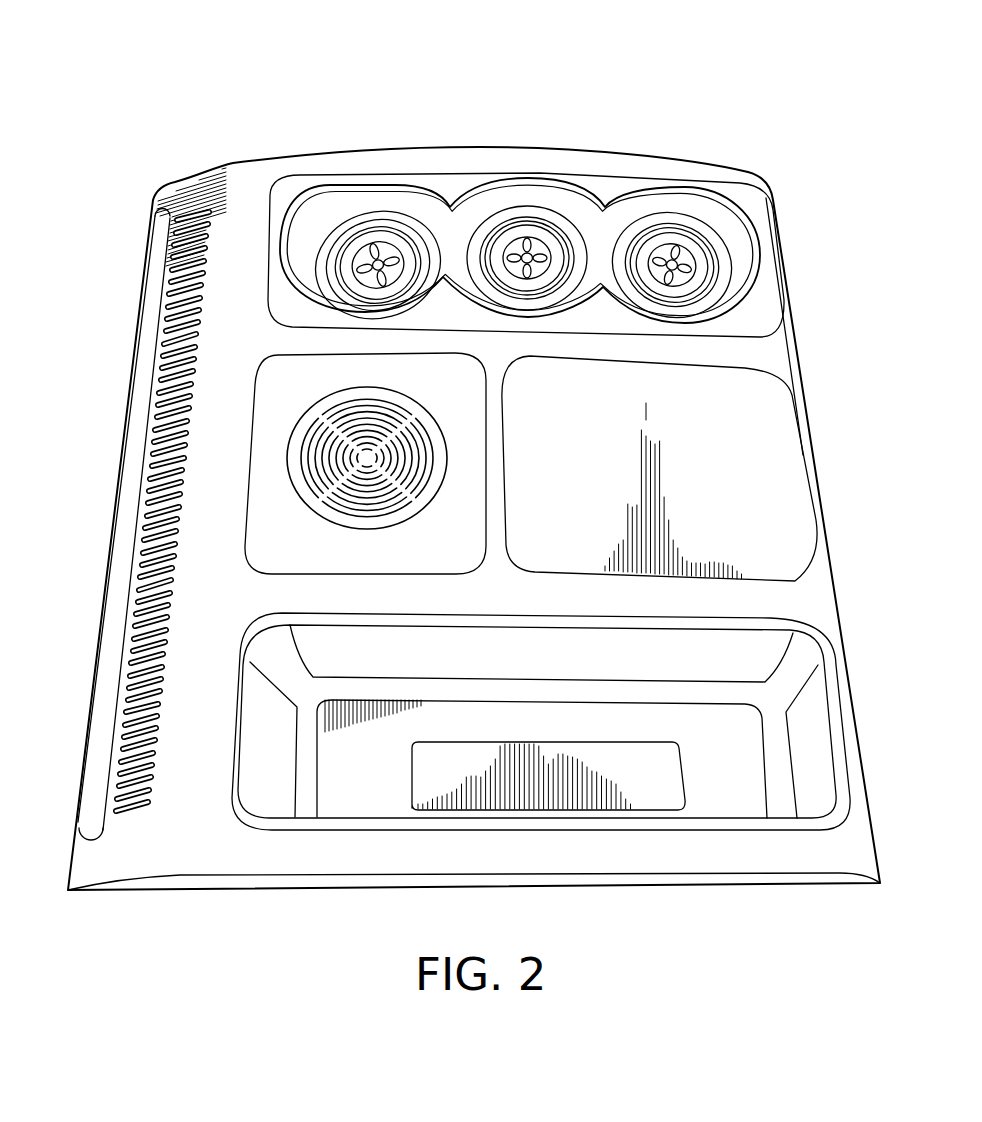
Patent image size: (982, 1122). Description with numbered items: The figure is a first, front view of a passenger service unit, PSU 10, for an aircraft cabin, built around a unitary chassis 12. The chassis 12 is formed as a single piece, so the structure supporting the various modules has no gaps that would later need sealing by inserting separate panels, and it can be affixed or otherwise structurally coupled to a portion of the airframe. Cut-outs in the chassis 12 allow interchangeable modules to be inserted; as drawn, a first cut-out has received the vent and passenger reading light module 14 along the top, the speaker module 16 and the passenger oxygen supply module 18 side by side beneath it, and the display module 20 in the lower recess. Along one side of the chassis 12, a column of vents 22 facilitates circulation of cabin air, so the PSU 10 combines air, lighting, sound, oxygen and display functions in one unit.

The passenger service unit (PSU) 10 is at (129, 86).
The unitary chassis 12 is at (190, 807).
The vent and passenger reading light module 14 is at (452, 196).
The speaker module 16 is at (272, 425).
The passenger oxygen supply module 18 is at (748, 453).
The display module 20 is at (703, 798).
The vents 22 is at (180, 287).